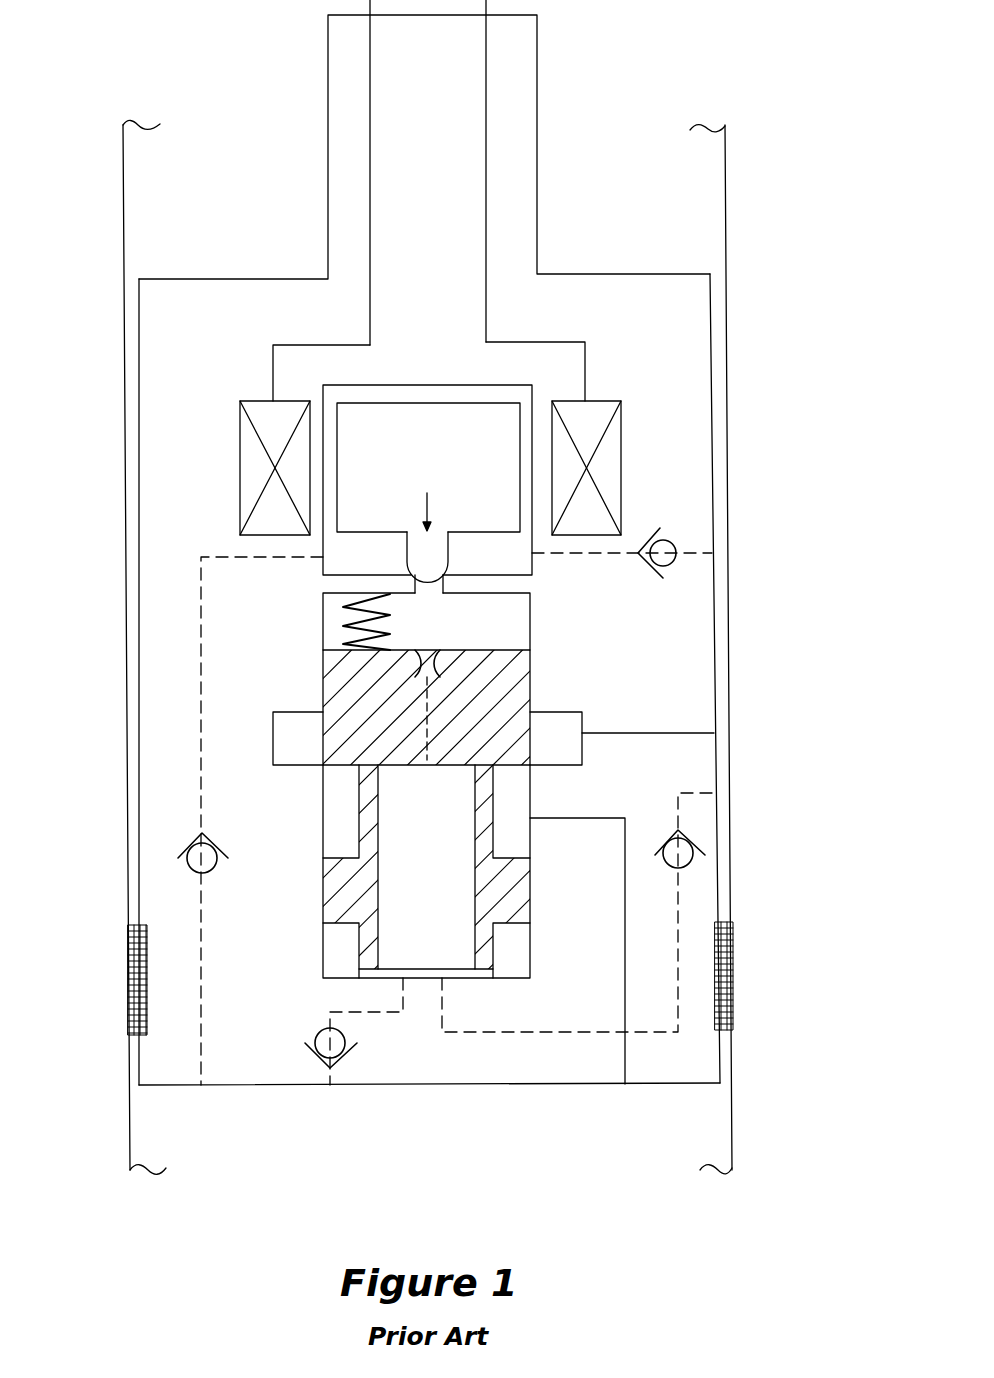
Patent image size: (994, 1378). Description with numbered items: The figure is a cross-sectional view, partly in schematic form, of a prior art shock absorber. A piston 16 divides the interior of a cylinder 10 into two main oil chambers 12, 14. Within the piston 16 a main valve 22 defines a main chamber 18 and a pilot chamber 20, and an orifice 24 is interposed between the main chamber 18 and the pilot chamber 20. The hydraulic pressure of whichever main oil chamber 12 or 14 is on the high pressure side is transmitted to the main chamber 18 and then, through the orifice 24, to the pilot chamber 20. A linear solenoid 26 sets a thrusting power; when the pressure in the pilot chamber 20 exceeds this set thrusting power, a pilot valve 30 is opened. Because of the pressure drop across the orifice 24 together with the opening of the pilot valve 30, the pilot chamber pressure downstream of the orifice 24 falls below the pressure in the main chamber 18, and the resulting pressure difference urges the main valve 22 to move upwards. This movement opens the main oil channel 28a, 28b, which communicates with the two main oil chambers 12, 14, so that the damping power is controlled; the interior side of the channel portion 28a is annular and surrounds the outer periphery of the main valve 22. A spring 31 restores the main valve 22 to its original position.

The cylinder 10 is at (726, 208).
The main oil chamber 12 is at (265, 197).
The main oil chamber 14 is at (287, 1145).
The piston 16 is at (710, 299).
The main chamber 18 is at (453, 948).
The pilot chamber 20 is at (462, 639).
The main valve 22 is at (513, 648).
The orifice 24 is at (415, 652).
The linear solenoid 26 is at (455, 385).
The main oil channel 28a is at (648, 733).
The main oil channel 28b is at (625, 1053).
The pilot valve 30 is at (463, 565).
The spring 31 is at (345, 627).